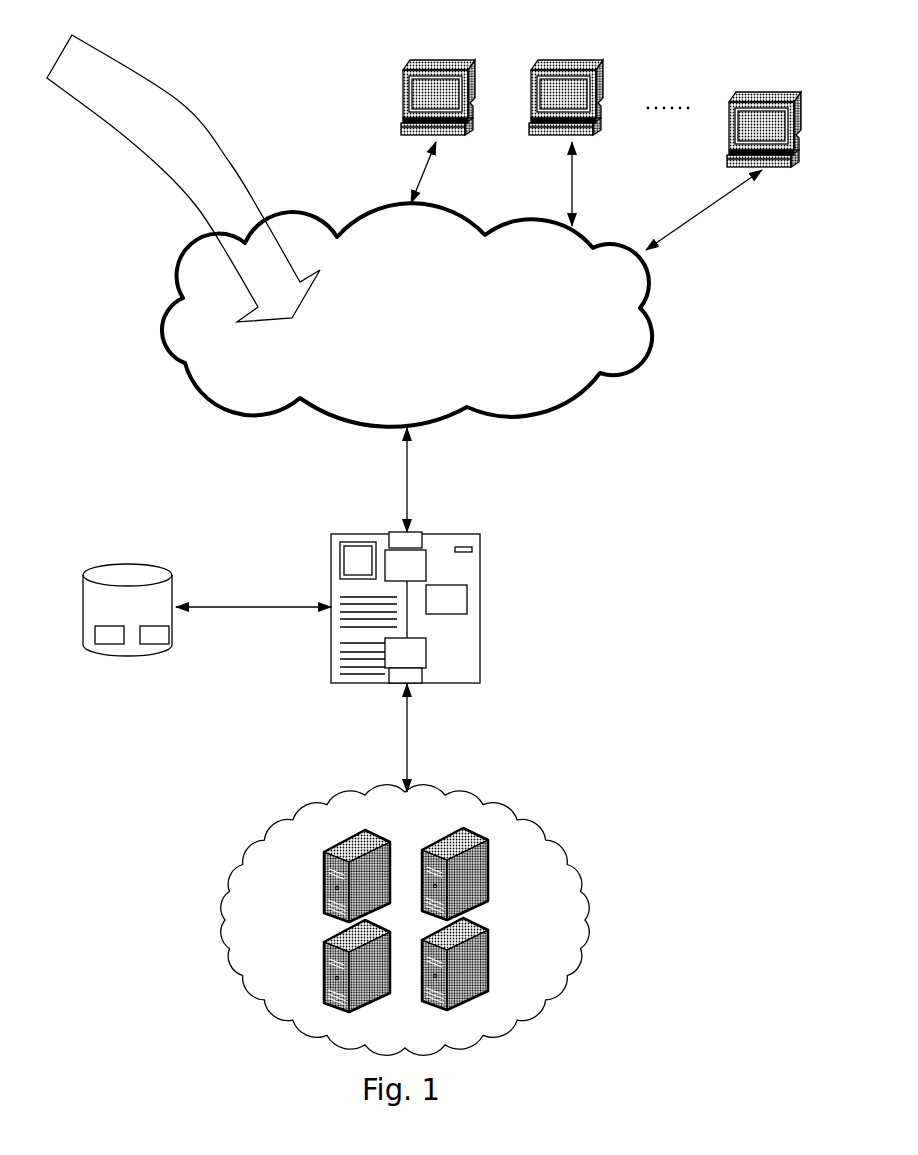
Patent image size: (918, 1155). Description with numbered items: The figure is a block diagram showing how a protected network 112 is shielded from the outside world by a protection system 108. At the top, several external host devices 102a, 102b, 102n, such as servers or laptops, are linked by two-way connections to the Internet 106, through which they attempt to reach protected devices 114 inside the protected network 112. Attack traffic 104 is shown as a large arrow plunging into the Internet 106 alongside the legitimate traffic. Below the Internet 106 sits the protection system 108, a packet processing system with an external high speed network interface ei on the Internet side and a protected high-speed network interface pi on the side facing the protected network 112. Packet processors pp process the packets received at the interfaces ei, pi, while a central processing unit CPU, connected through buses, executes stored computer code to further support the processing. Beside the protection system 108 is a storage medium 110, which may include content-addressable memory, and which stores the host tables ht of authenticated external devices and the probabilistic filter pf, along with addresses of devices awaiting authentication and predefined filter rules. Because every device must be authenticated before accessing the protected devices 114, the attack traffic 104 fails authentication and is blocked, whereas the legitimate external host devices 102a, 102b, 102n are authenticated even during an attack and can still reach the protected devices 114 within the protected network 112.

The external host device 102a is at (440, 65).
The external host device 102b is at (568, 65).
The external host device 102n is at (767, 97).
The attack traffic 104 is at (180, 102).
The Internet 106 is at (141, 316).
The protection system 108 is at (465, 607).
The storage medium 110 is at (119, 647).
The protected network 112 is at (585, 918).
The protected devices 114 is at (337, 842).
The external high speed network interface ei is at (422, 540).
The packet processors pp is at (426, 571).
The central processing unit CPU is at (467, 601).
The protected high-speed network interface pi is at (422, 676).
The host tables ht is at (117, 644).
The probabilistic filter pf is at (160, 644).